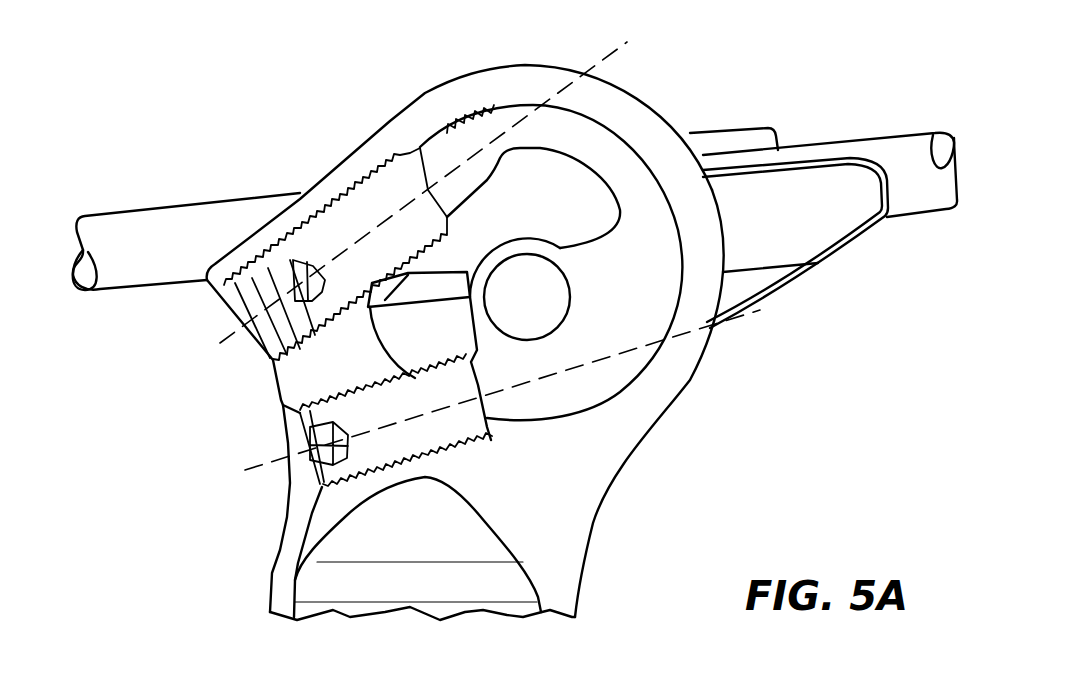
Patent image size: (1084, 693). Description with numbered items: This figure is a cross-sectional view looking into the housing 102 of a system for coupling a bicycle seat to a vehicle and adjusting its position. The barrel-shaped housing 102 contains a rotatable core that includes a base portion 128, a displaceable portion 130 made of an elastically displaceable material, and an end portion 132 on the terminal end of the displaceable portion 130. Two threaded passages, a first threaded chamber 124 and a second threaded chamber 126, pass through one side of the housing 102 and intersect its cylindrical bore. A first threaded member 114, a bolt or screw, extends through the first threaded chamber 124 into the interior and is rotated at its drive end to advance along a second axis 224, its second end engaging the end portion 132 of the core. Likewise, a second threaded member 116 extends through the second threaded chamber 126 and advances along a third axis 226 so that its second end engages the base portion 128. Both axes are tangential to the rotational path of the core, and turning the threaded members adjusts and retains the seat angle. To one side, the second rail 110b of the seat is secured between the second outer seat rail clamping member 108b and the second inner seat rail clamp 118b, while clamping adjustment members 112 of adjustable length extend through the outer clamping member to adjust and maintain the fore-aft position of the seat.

The housing 102 is at (527, 93).
The second outer seat rail clamping member 108b is at (717, 143).
The second rail 110b is at (130, 230).
The clamping adjustment members 112 is at (527, 297).
The first threaded member 114 is at (248, 313).
The second threaded member 116 is at (330, 453).
The second inner seat rail clamp 118b is at (827, 233).
The first threaded chamber 124 is at (260, 264).
The second threaded chamber 126 is at (470, 438).
The base portion 128 is at (578, 380).
The displaceable portion 130 is at (583, 127).
The end portion 132 is at (430, 140).
The second axis 224 is at (607, 63).
The third axis 226 is at (703, 332).